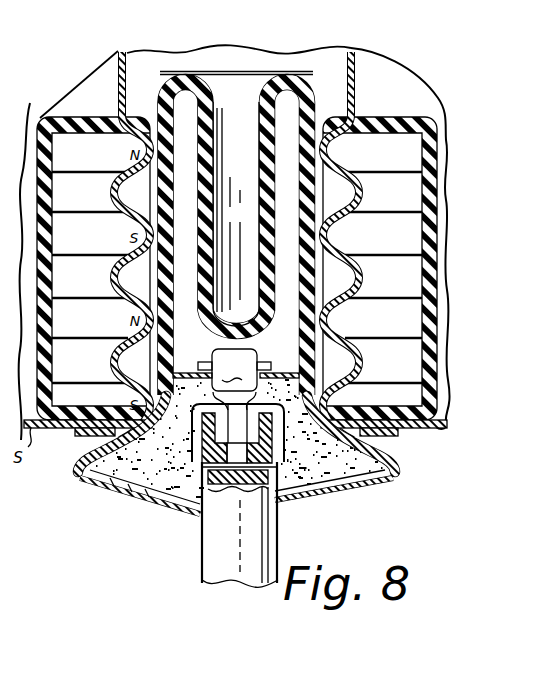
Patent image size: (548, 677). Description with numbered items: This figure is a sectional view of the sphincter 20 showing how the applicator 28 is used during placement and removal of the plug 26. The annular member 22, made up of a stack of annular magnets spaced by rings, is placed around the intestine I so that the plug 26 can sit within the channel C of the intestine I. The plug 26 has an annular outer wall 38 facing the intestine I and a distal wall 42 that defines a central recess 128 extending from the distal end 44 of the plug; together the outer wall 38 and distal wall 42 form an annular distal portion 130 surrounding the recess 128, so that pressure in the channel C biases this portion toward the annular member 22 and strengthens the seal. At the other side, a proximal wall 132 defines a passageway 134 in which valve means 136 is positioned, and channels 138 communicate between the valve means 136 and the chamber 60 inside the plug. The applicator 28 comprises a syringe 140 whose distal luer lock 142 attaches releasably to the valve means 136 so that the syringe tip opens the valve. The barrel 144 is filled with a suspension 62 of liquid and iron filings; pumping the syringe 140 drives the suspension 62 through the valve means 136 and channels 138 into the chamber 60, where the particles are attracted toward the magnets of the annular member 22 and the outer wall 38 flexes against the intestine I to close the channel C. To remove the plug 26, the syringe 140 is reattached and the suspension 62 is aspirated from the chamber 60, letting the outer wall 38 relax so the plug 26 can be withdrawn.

The sphincter 20 is at (76, 490).
The annular member 22 is at (52, 114).
The plug 26 is at (95, 486).
The applicator 28 is at (194, 571).
The annular outer wall 38 is at (309, 349).
The distal wall 42 is at (262, 130).
The distal end 44 is at (293, 75).
The chamber 60 is at (120, 492).
The suspension 62 is at (137, 494).
The central recess 128 is at (238, 70).
The annular distal portion 130 is at (268, 182).
The proximal wall 132 is at (303, 481).
The passageway 134 is at (202, 513).
The valve means 136 is at (143, 449).
The channels 138 is at (234, 379).
The syringe 140 is at (202, 540).
The distal luer lock 142 is at (130, 470).
The barrel 144 is at (284, 552).
The intestine I is at (125, 52).
The channel C is at (148, 52).